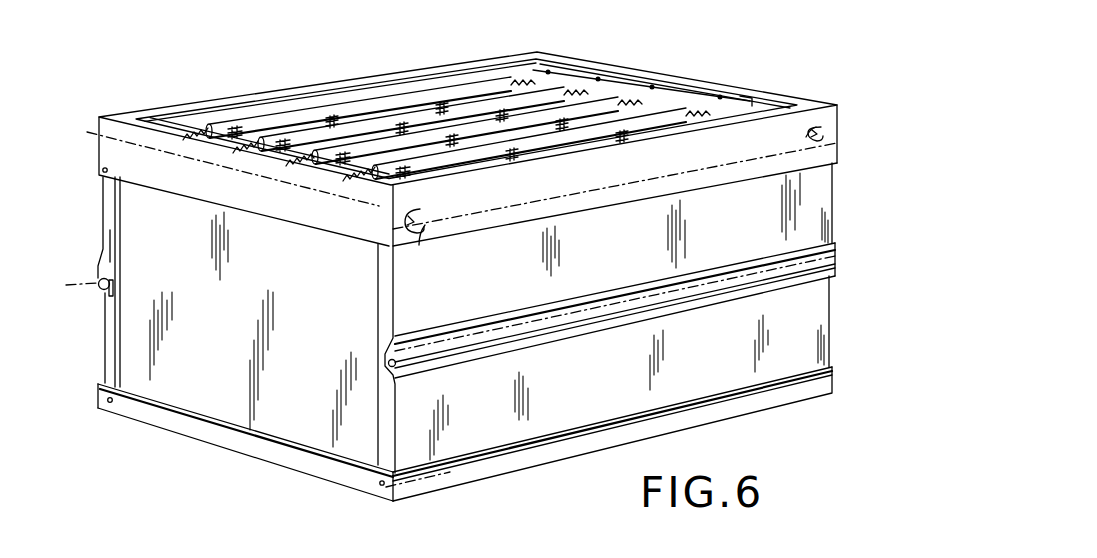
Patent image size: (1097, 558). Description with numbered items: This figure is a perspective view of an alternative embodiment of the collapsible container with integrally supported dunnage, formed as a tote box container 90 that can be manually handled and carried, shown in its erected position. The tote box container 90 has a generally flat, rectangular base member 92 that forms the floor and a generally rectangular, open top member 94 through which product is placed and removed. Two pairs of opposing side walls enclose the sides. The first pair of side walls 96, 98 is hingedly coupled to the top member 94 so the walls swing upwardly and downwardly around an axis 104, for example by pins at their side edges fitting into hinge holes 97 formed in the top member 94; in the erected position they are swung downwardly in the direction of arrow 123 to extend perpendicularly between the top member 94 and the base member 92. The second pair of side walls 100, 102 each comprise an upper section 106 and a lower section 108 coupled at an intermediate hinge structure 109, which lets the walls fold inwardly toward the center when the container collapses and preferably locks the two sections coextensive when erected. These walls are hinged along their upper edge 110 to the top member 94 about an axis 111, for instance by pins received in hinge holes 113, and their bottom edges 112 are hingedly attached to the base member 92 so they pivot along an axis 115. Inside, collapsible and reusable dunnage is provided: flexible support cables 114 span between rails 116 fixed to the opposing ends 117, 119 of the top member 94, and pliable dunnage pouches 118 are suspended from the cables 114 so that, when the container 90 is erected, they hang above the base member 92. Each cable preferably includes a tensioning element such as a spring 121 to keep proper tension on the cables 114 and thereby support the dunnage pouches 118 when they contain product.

The tote box container 90 is at (245, 462).
The base member 92 is at (324, 481).
The top member 94 is at (866, 70).
The side wall 96 is at (250, 325).
The hinge holes 97 is at (405, 213).
The side wall 98 is at (742, 97).
The side wall 100 is at (832, 218).
The side wall 102 is at (118, 258).
The axis 104 is at (760, 160).
The upper section 106 is at (100, 199).
The lower section 108 is at (612, 393).
The intermediate hinge structure 109 is at (92, 284).
The upper edge 110 is at (660, 190).
The axis 111 is at (78, 143).
The bottom edges 112 is at (668, 400).
The hinge holes 113 is at (108, 168).
The flexible support cables 114 is at (203, 136).
The axis 115 is at (447, 477).
The rails 116 is at (617, 82).
The end of top member 117 is at (684, 77).
The dunnage pouches 118 is at (430, 102).
The end of top member 119 is at (244, 203).
The spring 121 is at (584, 82).
The arrow 123 is at (419, 245).